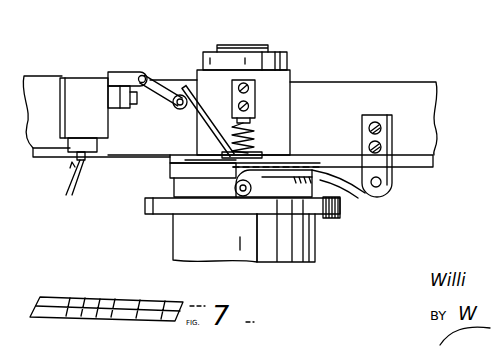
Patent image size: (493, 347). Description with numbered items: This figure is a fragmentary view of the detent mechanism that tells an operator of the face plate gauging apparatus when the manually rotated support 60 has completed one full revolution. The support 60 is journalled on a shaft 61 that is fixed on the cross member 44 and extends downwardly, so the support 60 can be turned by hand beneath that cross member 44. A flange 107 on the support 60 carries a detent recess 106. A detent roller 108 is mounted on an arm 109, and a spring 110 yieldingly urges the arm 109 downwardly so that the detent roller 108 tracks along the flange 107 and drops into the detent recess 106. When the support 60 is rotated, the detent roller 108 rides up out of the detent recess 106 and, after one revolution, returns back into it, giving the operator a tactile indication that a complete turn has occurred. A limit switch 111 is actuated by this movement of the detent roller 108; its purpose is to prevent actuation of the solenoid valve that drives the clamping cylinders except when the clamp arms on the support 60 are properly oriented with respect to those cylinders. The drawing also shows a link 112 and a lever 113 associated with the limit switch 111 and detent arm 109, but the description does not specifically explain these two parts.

The cross member 44 is at (424, 103).
The support 60 is at (153, 237).
The shaft 61 is at (252, 13).
The detent recess 106 is at (250, 197).
The flange 107 is at (330, 221).
The detent roller 108 is at (173, 185).
The arm 109 is at (347, 195).
The spring 110 is at (252, 154).
The limit switch 111 is at (75, 97).
The link 112 is at (152, 103).
The lever 113 is at (205, 126).